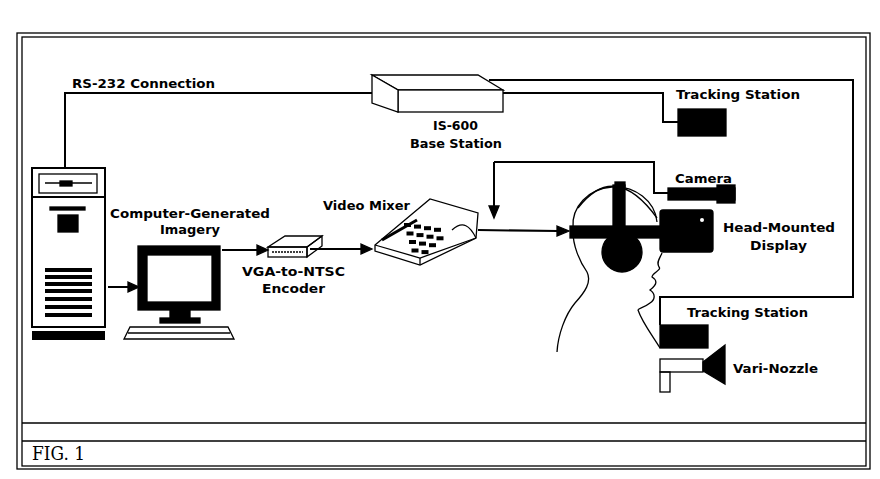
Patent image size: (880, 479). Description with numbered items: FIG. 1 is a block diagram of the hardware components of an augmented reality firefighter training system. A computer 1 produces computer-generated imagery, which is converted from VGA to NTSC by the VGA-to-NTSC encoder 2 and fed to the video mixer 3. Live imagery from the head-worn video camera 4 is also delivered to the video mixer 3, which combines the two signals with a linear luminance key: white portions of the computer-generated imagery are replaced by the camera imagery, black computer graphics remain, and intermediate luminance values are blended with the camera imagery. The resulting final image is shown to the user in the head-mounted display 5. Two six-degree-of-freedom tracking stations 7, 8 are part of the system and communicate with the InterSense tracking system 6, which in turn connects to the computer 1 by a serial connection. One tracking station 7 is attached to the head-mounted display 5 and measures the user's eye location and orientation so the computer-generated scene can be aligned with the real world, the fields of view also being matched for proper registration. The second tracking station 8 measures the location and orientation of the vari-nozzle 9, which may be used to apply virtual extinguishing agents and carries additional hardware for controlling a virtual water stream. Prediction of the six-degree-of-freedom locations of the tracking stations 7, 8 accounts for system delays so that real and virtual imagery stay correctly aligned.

The computer 1 is at (101, 340).
The VGA-to-NTSC encoder 2 is at (300, 236).
The video mixer 3 is at (405, 262).
The head-worn video camera 4 is at (736, 196).
The head-mounted display (HMD) 5 is at (706, 252).
The InterSense IS-600 tracking system 6 is at (433, 75).
The tracking station 7 is at (726, 124).
The tracking station 8 is at (720, 333).
The vari-nozzle 9 is at (720, 384).